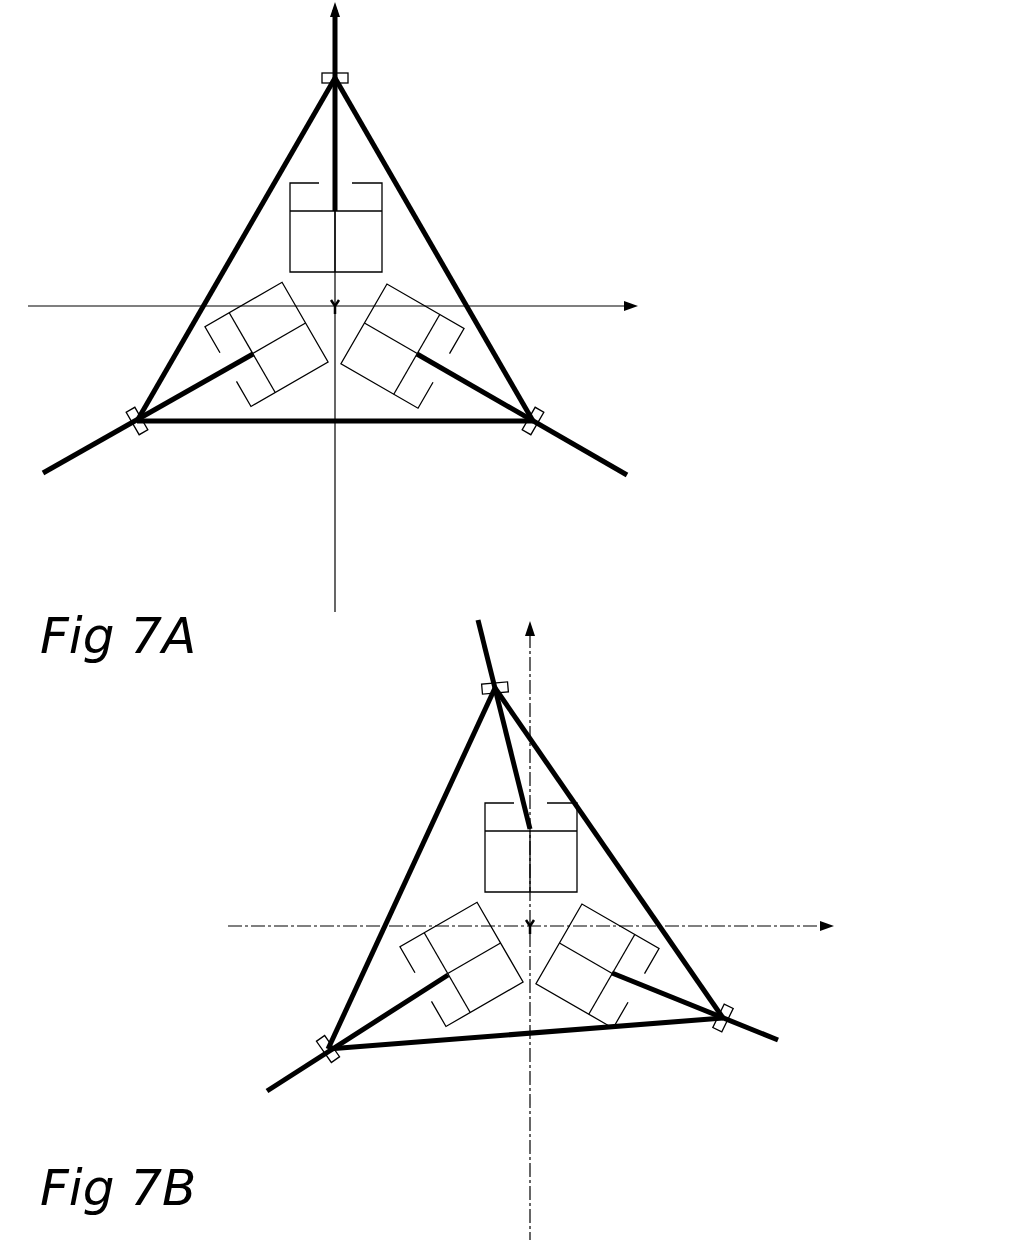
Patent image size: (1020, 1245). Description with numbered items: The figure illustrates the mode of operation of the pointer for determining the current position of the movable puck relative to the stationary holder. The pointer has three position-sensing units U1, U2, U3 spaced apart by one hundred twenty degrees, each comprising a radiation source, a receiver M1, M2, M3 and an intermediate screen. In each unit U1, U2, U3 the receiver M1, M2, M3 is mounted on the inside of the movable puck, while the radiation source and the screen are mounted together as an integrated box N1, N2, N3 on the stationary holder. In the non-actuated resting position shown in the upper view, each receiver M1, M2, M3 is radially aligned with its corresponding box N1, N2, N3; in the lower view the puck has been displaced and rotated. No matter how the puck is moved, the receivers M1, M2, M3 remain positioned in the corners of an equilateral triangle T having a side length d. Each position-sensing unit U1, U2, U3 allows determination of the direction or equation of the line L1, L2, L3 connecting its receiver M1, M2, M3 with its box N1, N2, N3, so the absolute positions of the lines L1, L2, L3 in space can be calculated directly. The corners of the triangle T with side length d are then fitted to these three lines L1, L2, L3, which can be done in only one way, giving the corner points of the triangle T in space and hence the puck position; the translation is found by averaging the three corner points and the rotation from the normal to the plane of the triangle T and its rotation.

In FIG. 7A, the equilateral triangle T is at (335, 269).
In FIG. 7B, the equilateral triangle T is at (525, 880).
In FIG. 7A, the line L1 is at (333, 116).
In FIG. 7B, the line L1 is at (500, 721).
In FIG. 7A, the line L2 is at (170, 422).
In FIG. 7B, the line L2 is at (362, 1044).
In FIG. 7A, the line L3 is at (500, 423).
In FIG. 7B, the line L3 is at (685, 1022).
In FIG. 7A, the side length d is at (266, 181).
In FIG. 7B, the side length d is at (438, 805).
In FIG. 7A, the receiver M1 is at (346, 73).
In FIG. 7B, the receiver M1 is at (488, 690).
In FIG. 7A, the receiver M2 is at (143, 431).
In FIG. 7B, the receiver M2 is at (338, 1061).
In FIG. 7A, the receiver M3 is at (546, 414).
In FIG. 7B, the receiver M3 is at (718, 1032).
In FIG. 7A, the position-sensing unit U1 is at (360, 148).
In FIG. 7B, the position-sensing unit U1 is at (556, 740).
In FIG. 7A, the position-sensing unit U2 is at (182, 372).
In FIG. 7B, the position-sensing unit U2 is at (362, 990).
In FIG. 7A, the position-sensing unit U3 is at (498, 364).
In FIG. 7B, the position-sensing unit U3 is at (714, 972).
In FIG. 7A, the box N1 is at (396, 218).
In FIG. 7B, the box N1 is at (586, 840).
In FIG. 7A, the box N2 is at (226, 301).
In FIG. 7B, the box N2 is at (416, 925).
In FIG. 7A, the box N3 is at (442, 297).
In FIG. 7B, the box N3 is at (624, 916).